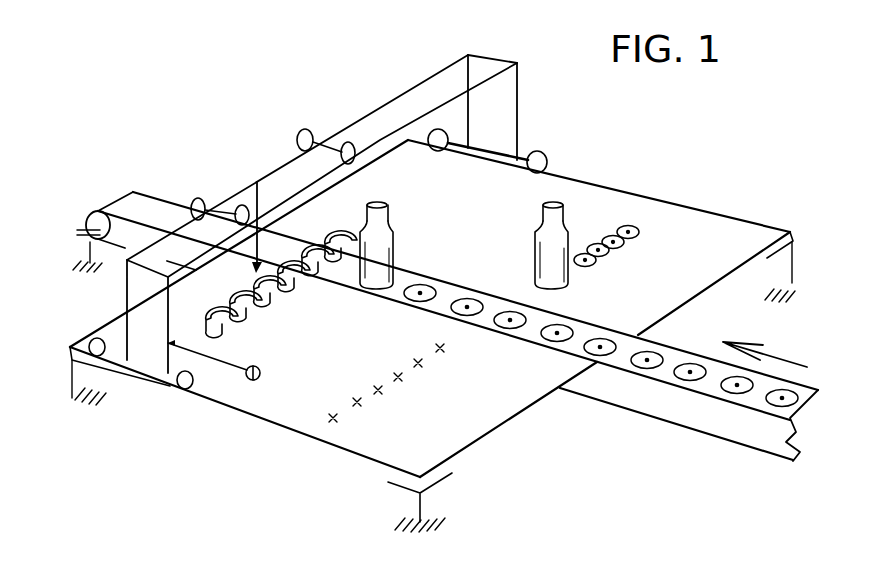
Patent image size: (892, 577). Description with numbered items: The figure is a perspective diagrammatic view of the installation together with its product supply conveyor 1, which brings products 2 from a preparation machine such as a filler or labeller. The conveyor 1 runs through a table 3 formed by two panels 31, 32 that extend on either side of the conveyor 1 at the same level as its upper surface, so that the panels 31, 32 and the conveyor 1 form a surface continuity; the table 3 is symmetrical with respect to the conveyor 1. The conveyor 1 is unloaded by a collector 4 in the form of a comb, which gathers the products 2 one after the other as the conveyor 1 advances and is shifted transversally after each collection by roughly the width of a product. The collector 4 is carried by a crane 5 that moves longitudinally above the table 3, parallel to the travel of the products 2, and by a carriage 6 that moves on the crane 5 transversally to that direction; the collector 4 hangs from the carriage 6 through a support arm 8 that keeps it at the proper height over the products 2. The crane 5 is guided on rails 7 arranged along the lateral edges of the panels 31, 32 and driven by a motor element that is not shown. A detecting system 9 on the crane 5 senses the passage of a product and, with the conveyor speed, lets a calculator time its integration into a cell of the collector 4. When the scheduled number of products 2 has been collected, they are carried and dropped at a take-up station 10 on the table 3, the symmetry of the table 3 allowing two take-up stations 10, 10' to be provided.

The supply conveyor 1 is at (130, 193).
The products 2 is at (400, 247).
The table 3 is at (594, 208).
The collector 4 is at (284, 305).
The crane 5 is at (424, 69).
The carriage 6 is at (255, 171).
The rails 7 is at (673, 203).
The arm 8 is at (260, 188).
The detecting system 9 is at (229, 369).
The take-up station 10 is at (617, 262).
The take-up station 10' is at (396, 387).
The panel 31 is at (742, 232).
The panel 32 is at (497, 403).